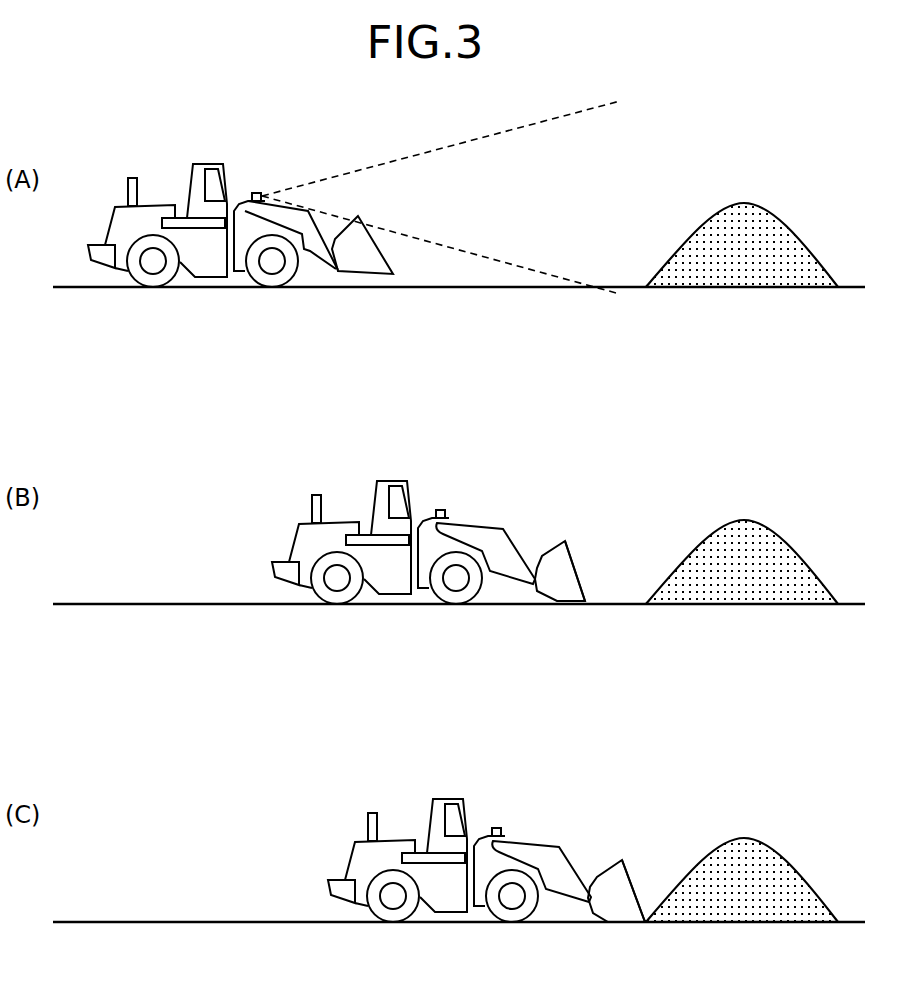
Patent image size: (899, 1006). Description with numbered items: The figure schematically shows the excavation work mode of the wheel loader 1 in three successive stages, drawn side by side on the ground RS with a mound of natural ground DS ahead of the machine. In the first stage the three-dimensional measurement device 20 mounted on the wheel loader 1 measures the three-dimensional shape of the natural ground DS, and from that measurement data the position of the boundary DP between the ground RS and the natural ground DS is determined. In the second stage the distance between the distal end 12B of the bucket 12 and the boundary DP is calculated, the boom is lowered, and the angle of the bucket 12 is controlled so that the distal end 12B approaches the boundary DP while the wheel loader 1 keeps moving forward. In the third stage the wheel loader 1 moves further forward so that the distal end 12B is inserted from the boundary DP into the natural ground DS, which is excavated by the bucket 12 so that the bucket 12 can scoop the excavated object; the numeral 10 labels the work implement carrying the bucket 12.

The wheel loader 1 is at (366, 537).
The work implement (lift arm / boom) 10 is at (315, 207).
The bucket 12 is at (371, 265).
The distal end of the bucket 12B is at (587, 603).
The three-dimensional measurement device 20 is at (257, 192).
The ground RS is at (455, 282).
The natural ground DS is at (745, 202).
The boundary DP is at (647, 285).